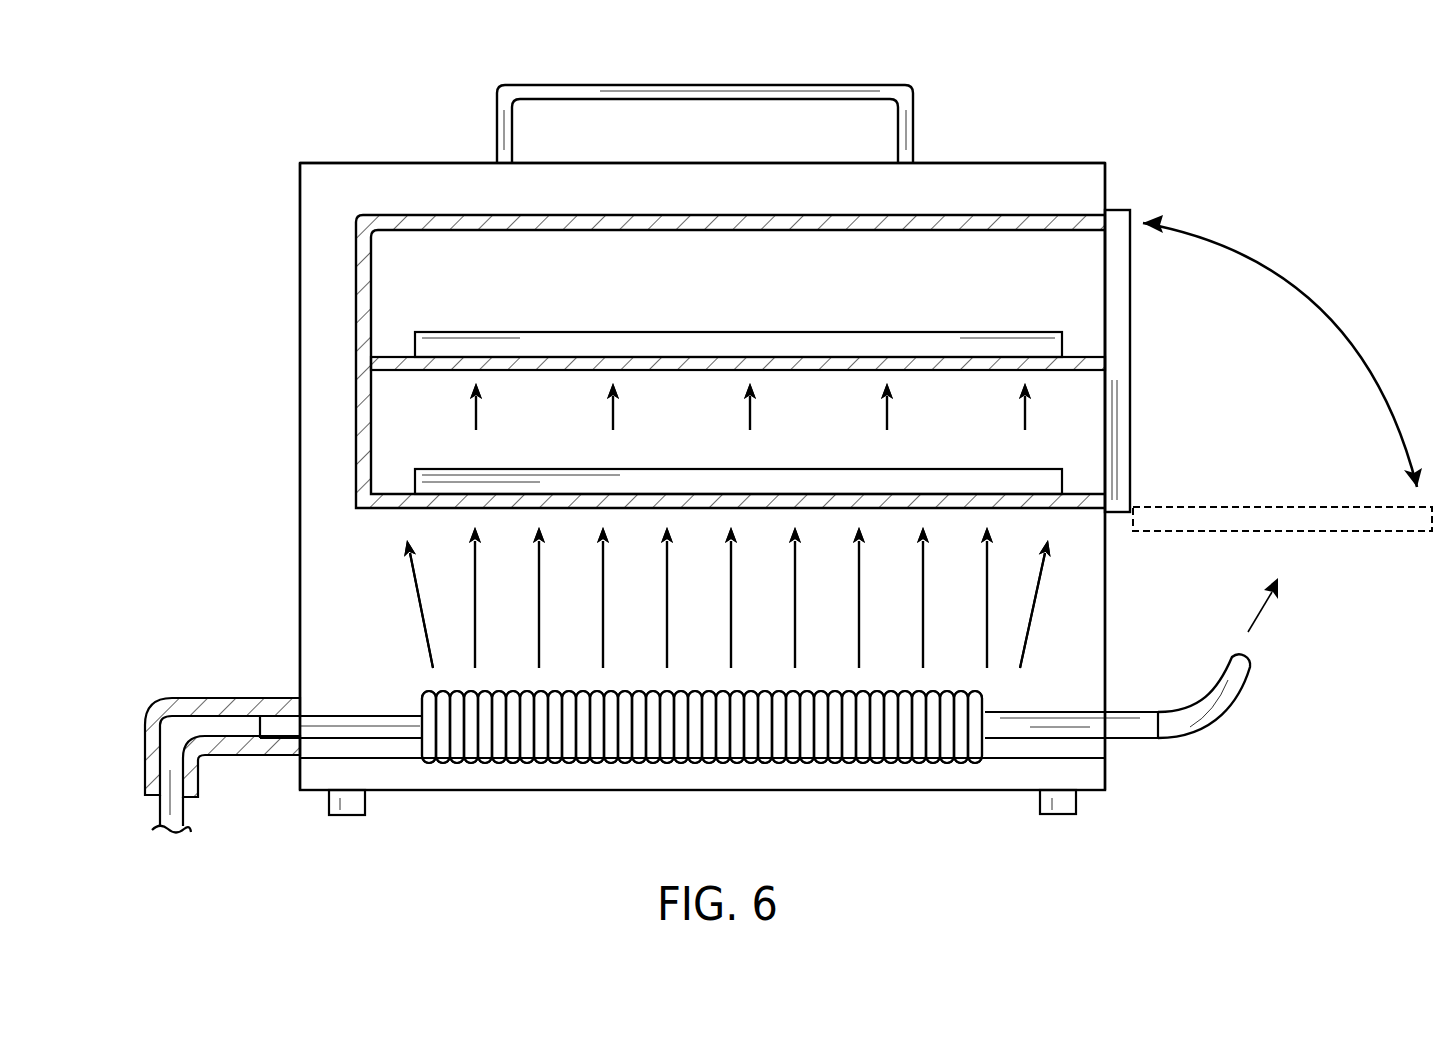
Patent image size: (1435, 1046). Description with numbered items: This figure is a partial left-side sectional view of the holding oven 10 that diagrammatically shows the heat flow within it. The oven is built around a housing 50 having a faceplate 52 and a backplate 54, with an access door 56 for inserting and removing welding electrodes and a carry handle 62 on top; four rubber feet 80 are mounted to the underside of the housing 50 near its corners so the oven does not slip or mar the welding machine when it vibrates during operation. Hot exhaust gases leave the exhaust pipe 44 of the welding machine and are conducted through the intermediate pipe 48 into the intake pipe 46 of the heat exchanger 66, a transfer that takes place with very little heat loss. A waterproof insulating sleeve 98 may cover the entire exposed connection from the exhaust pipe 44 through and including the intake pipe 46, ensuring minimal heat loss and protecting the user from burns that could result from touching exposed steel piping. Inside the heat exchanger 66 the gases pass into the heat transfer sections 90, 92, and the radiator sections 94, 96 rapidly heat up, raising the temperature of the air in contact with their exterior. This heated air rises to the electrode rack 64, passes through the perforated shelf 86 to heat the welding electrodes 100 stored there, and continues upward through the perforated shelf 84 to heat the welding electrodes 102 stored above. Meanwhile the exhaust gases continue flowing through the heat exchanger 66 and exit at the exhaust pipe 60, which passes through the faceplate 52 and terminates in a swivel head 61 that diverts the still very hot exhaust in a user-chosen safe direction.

The holding oven 10 is at (262, 125).
The exhaust pipe of the welding machine 44 is at (183, 818).
The intake pipe 46 is at (303, 716).
The intermediate pipe 48 is at (230, 716).
The housing 50 is at (413, 163).
The faceplate 52 is at (1107, 601).
The backplate 54 is at (300, 528).
The access door 56 is at (1131, 345).
The exhaust pipe 60 is at (1118, 740).
The swivel head 61 is at (1200, 735).
The carry handle 62 is at (913, 118).
The electrode rack 64 is at (978, 215).
The heat exchanger 66 is at (423, 742).
The rubber feet 80 is at (350, 815).
The perforated shelf 84 is at (395, 357).
The perforated shelf 86 is at (395, 493).
The heat transfer section 90 is at (704, 531).
The heat transfer section 92 is at (704, 531).
The radiator section 94 is at (545, 763).
The radiator section 96 is at (702, 759).
The insulating sleeve 98 is at (183, 698).
The welding electrodes 100 is at (700, 469).
The welding electrodes 102 is at (632, 332).